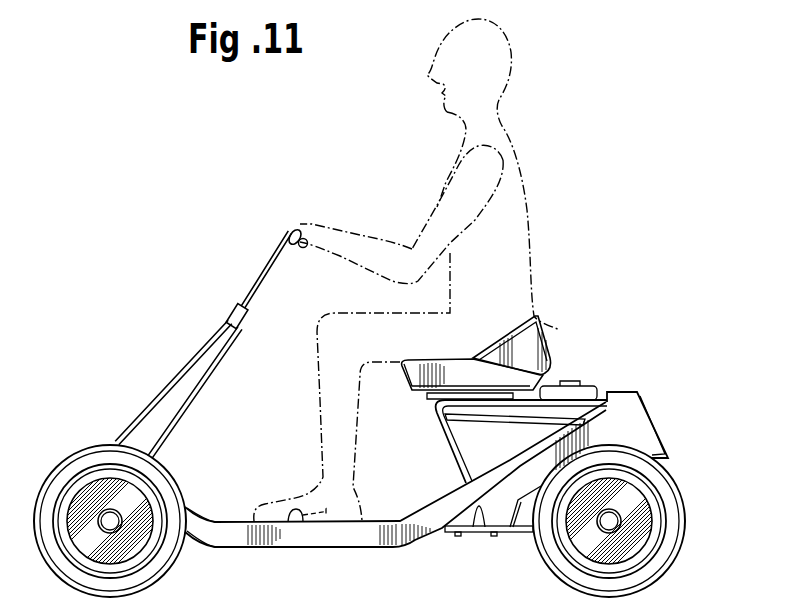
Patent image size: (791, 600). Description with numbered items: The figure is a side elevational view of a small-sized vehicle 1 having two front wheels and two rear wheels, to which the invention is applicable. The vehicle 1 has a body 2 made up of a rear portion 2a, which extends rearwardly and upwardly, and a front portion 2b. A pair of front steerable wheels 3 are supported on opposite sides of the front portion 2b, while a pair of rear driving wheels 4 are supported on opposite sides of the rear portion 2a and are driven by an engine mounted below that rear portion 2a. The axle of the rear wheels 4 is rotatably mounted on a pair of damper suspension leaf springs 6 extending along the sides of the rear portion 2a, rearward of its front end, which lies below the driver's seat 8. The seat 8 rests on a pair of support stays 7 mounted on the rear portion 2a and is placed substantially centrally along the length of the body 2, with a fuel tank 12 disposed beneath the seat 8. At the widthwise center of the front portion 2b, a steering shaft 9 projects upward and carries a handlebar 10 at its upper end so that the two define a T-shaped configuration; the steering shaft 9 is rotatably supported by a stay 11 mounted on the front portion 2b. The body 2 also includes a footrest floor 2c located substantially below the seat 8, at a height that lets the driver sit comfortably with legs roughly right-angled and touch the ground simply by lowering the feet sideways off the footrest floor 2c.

The small-sized vehicle 1 is at (270, 553).
The body 2 is at (369, 538).
The rear portion 2a is at (627, 413).
The front portion 2b is at (191, 516).
The footrest floor 2c is at (296, 518).
The front steerable wheels 3 is at (163, 557).
The rear driving wheels 4 is at (670, 540).
The damper suspension leaf springs 6 is at (522, 533).
The support stays 7 is at (575, 402).
The driver's seat 8 is at (538, 332).
The steering shaft 9 is at (262, 275).
The handlebar 10 is at (300, 224).
The stay 11 is at (166, 386).
The fuel tank 12 is at (470, 413).